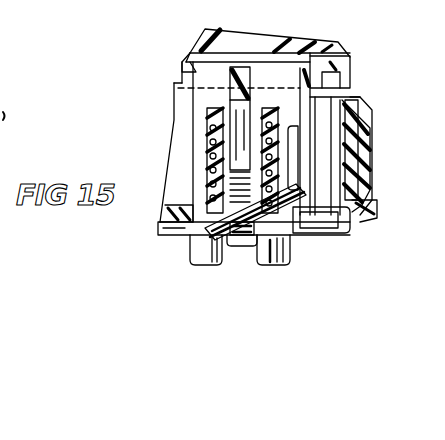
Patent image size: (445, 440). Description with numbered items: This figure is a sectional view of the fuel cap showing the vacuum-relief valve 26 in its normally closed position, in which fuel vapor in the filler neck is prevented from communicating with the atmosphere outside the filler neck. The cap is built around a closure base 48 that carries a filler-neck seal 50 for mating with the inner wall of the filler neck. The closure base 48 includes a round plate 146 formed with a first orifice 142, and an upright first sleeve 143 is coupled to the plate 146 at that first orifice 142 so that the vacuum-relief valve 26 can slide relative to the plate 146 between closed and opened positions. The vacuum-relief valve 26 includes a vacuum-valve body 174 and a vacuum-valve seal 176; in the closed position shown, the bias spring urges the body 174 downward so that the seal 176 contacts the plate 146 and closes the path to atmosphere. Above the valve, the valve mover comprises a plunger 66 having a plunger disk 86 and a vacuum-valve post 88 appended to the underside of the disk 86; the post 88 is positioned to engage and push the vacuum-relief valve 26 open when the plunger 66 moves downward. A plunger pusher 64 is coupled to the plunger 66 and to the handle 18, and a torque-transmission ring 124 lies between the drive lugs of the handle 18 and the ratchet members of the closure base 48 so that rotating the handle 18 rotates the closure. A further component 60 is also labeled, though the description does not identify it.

The handle 18 is at (315, 33).
The vacuum-relief valve 26 is at (244, 257).
The closure base 48 is at (366, 146).
The filler-neck seal 50 is at (358, 219).
The spring 60 is at (205, 152).
The plunger pusher 64 is at (350, 118).
The plunger 66 is at (180, 62).
The plunger disk 86 is at (181, 73).
The vacuum-valve post 88 is at (237, 73).
The torque-transmission ring 124 is at (352, 79).
The first orifice 142 is at (288, 251).
The first sleeve 143 is at (204, 120).
The round plate 146 is at (313, 233).
The vacuum-valve body 174 is at (143, 242).
The vacuum-valve seal 176 is at (222, 246).